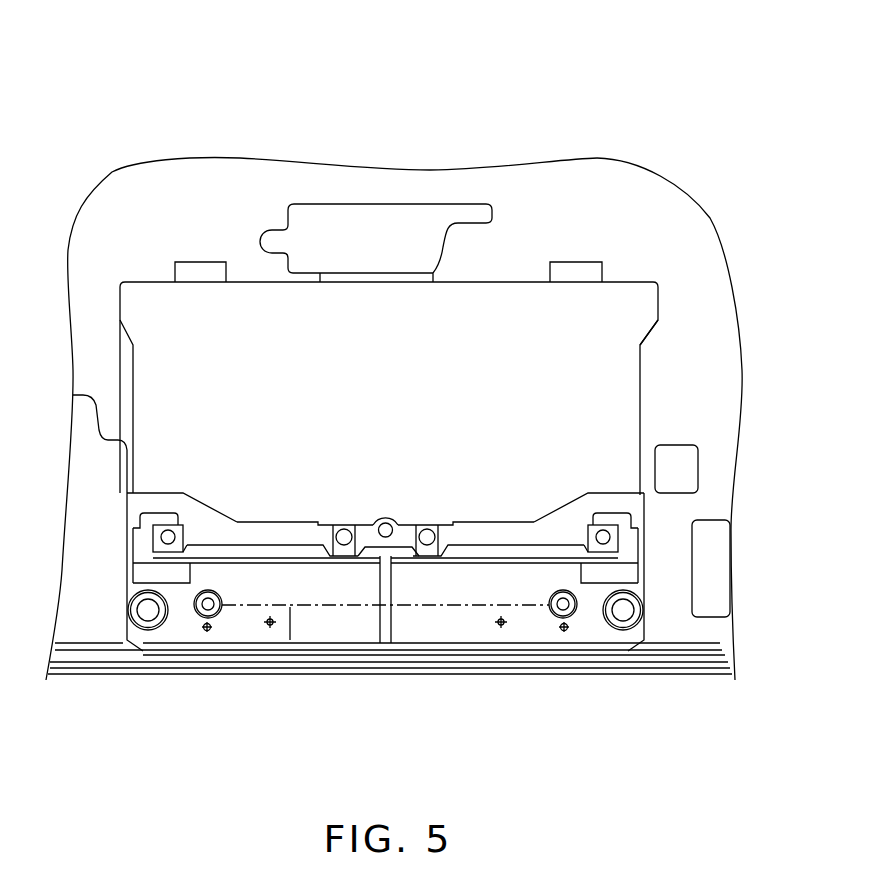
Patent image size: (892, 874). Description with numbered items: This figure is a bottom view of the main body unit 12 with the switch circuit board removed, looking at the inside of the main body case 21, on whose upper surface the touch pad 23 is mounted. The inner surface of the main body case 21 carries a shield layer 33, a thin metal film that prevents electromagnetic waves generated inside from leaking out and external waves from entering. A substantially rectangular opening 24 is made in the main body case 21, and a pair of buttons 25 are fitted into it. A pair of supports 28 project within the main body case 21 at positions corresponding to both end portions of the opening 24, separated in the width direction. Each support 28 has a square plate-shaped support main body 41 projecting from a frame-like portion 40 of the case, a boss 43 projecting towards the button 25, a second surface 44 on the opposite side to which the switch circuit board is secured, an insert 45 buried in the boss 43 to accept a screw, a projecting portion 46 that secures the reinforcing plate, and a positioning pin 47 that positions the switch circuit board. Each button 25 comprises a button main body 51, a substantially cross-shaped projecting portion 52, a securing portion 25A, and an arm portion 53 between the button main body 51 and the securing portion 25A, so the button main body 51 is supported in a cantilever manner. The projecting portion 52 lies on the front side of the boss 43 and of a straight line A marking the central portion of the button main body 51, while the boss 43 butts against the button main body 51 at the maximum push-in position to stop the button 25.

The main body unit 12 is at (684, 84).
The main body case 21 is at (597, 158).
The touch pad 23 is at (250, 298).
The shield layer 33 is at (697, 233).
The opening 24 is at (630, 565).
The button 25 is at (346, 580).
The securing portion 25A is at (258, 535).
The support 28 is at (167, 645).
The frame-like portion 40 is at (716, 655).
The support main body 41 is at (182, 597).
The boss 43 is at (222, 600).
The second surface 44 is at (144, 637).
The insert 45 is at (130, 620).
The projecting portion 46 is at (132, 598).
The positioning pin 47 is at (207, 632).
The button main body 51 is at (342, 630).
The projecting portion 52 is at (270, 615).
The arm portion 53 is at (163, 556).
The straight line A is at (290, 640).